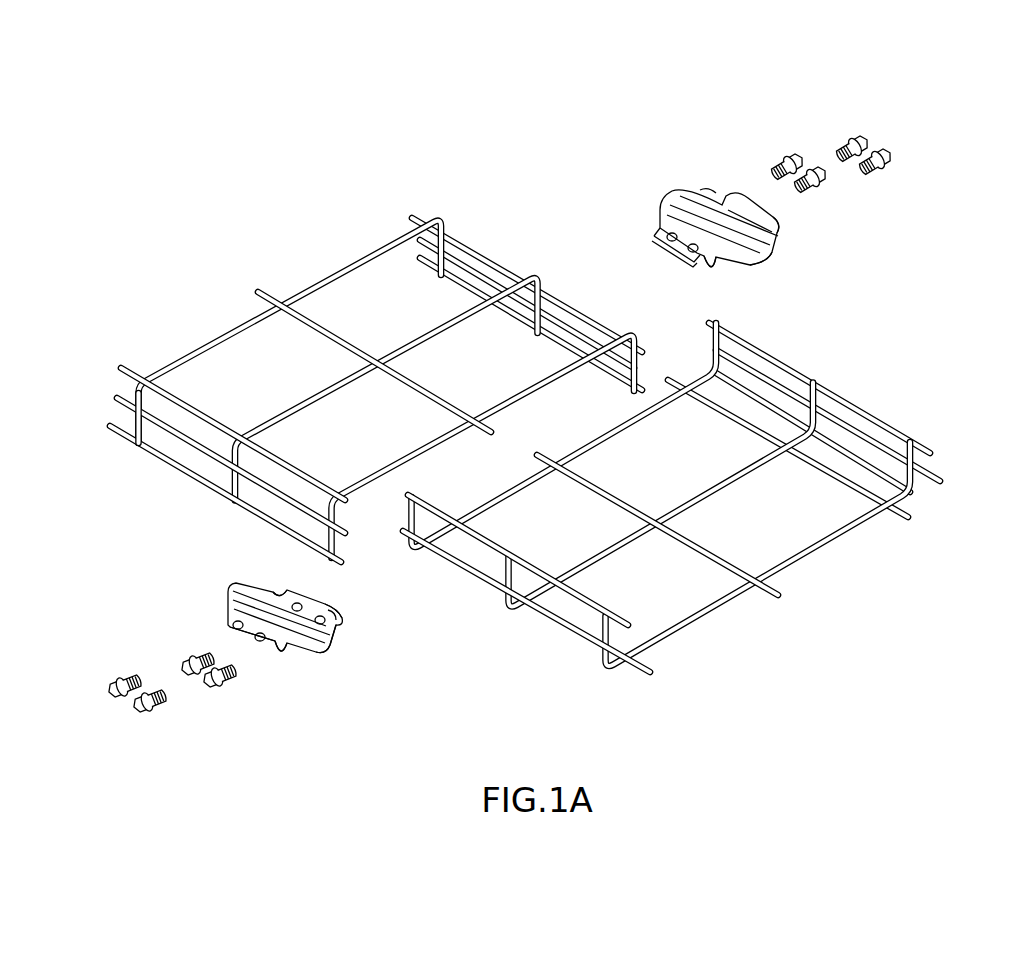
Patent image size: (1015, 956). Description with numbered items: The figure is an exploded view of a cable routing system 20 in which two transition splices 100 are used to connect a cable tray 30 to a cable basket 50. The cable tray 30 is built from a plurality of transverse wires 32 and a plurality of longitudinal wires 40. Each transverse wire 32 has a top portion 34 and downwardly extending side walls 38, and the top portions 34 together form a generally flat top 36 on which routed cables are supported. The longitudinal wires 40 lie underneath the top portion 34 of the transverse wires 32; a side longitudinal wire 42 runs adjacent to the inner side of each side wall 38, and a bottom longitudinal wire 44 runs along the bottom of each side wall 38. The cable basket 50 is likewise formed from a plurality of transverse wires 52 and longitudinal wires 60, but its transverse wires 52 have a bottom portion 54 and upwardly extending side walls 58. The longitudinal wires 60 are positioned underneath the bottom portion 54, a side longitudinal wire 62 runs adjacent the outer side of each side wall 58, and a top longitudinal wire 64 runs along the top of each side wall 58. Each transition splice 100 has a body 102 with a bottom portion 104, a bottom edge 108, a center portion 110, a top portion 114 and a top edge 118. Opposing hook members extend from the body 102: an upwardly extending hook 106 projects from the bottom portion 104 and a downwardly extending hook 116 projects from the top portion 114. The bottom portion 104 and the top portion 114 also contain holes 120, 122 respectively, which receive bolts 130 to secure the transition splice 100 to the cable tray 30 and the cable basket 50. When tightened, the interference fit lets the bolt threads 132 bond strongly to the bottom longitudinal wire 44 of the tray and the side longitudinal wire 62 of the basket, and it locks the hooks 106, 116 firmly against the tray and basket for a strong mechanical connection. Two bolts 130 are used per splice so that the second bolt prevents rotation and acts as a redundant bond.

The cable routing system 20 is at (285, 140).
The cable tray 30 is at (165, 322).
The transverse wires 32 is at (313, 283).
The top portion 34 is at (372, 250).
The flat top 36 is at (283, 347).
The side walls 38 is at (115, 400).
The longitudinal wires 40 is at (135, 372).
The side longitudinal wire 42 is at (175, 435).
The bottom longitudinal wire 44 is at (180, 480).
The cable basket 50 is at (853, 365).
The transverse wires 52 is at (680, 640).
The bottom portion 54 is at (795, 570).
The side walls 58 is at (585, 633).
The longitudinal wires 60 is at (895, 520).
The side longitudinal wire 62 is at (940, 470).
The top longitudinal wire 64 is at (905, 412).
The transition splice 100 is at (650, 130).
The body 102 is at (660, 205).
The bottom portion 104 is at (700, 265).
The upwardly extending hook 106 is at (660, 244).
The bottom edge 108 is at (716, 270).
The center portion 110 is at (765, 258).
The top portion 114 is at (777, 236).
The downwardly extending hook 116 is at (777, 214).
The top edge 118 is at (712, 187).
The hole 120 is at (672, 235).
The hole 122 is at (340, 636).
The bolts 130 is at (870, 145).
The bolt threads 132 is at (867, 168).